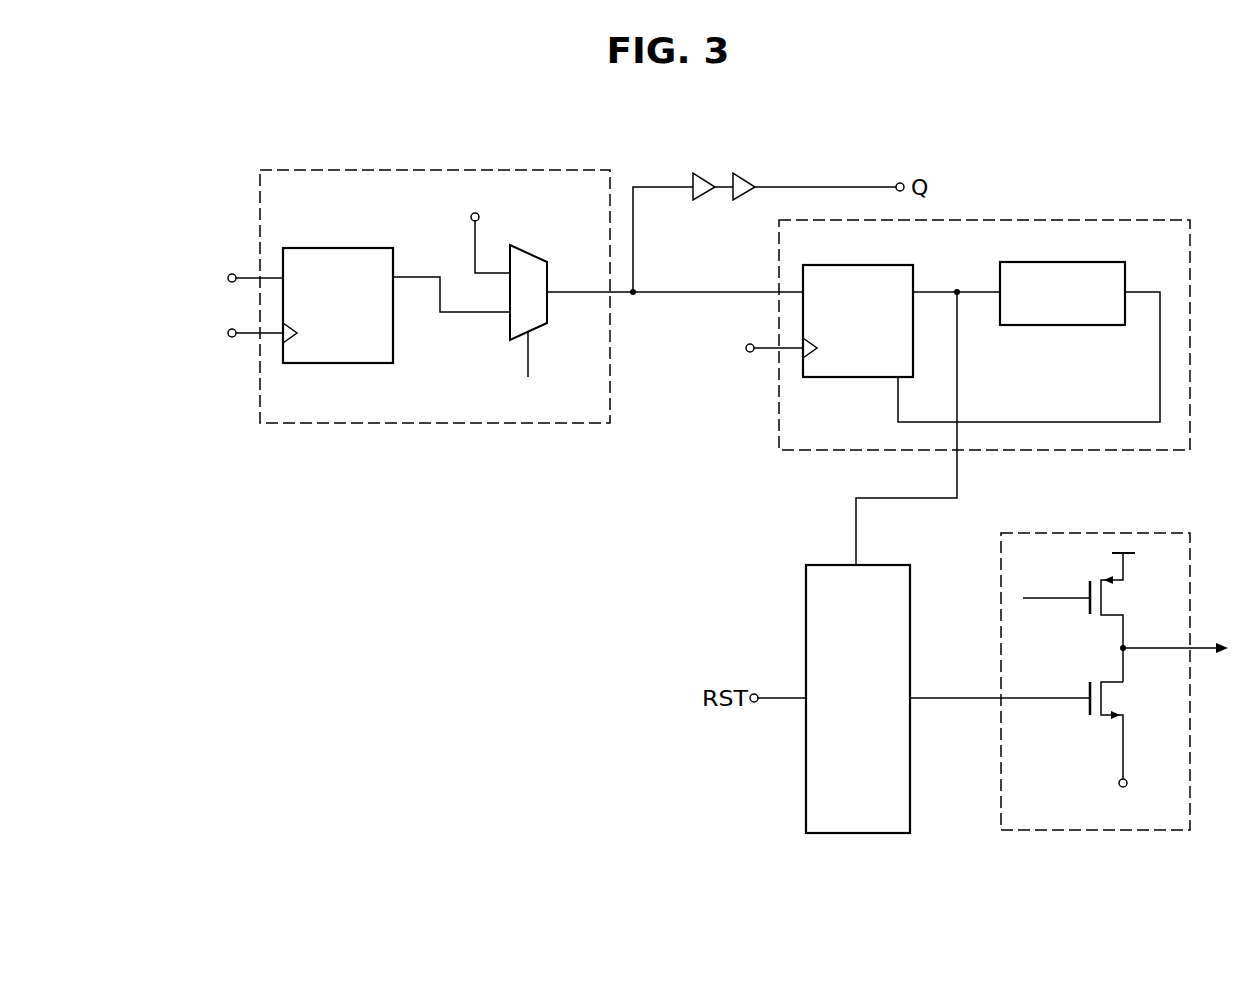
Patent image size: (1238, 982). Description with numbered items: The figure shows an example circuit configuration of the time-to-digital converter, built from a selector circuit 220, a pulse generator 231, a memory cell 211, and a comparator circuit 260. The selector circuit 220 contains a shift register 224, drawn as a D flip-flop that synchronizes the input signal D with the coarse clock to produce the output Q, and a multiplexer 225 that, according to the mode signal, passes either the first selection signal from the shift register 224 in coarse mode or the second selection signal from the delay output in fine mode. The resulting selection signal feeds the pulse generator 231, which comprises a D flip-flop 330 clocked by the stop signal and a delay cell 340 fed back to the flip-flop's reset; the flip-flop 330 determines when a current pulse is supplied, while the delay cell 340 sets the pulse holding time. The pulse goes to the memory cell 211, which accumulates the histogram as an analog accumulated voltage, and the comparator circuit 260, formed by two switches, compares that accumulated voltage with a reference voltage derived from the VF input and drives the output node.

The selector circuit 220 is at (537, 170).
The shift register 224 is at (340, 248).
The multiplexer 225 is at (523, 253).
The pulse generator 231 is at (1113, 220).
The D flip-flop 330 is at (855, 265).
The delay cell 340 is at (1065, 262).
The memory cell 211 is at (877, 565).
The comparator circuit 260 is at (1117, 533).